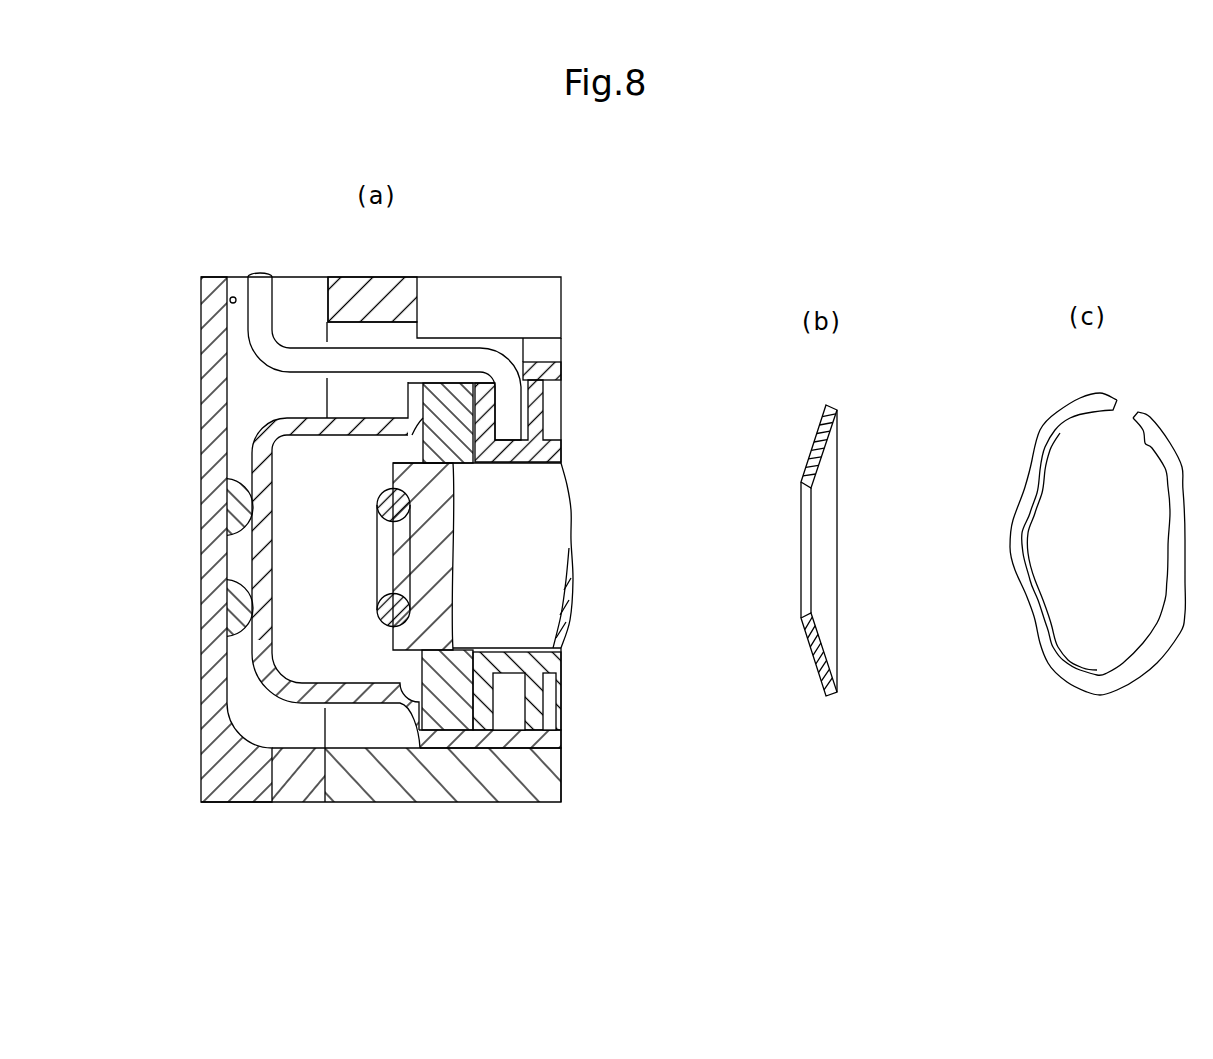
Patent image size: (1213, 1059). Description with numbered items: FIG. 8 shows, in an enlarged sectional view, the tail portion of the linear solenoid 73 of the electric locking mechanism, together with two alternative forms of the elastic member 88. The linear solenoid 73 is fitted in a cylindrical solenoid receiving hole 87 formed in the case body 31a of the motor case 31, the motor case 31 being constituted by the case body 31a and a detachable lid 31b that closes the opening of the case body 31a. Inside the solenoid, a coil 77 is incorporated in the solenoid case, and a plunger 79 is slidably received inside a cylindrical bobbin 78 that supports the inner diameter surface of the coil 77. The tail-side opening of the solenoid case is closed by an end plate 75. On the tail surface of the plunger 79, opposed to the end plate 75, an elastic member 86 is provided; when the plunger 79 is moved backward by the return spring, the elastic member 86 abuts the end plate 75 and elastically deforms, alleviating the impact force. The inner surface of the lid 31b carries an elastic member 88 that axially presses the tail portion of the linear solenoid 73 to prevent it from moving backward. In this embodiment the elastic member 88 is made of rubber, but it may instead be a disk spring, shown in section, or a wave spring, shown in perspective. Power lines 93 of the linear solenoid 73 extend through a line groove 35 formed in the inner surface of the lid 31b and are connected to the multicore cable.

The motor case 31 is at (344, 276).
The case body 31a is at (418, 790).
The lid 31b is at (212, 366).
The line groove 35 is at (230, 298).
The power lines 93 is at (254, 277).
The end plate 75 is at (255, 462).
The solenoid receiving hole 87 is at (558, 738).
The linear solenoid 73 is at (564, 413).
The plunger 79 is at (538, 548).
The elastic member 86 is at (384, 621).
The bobbin 78 is at (550, 662).
The coil 77 is at (560, 700).
The elastic member 88 is at (238, 610).